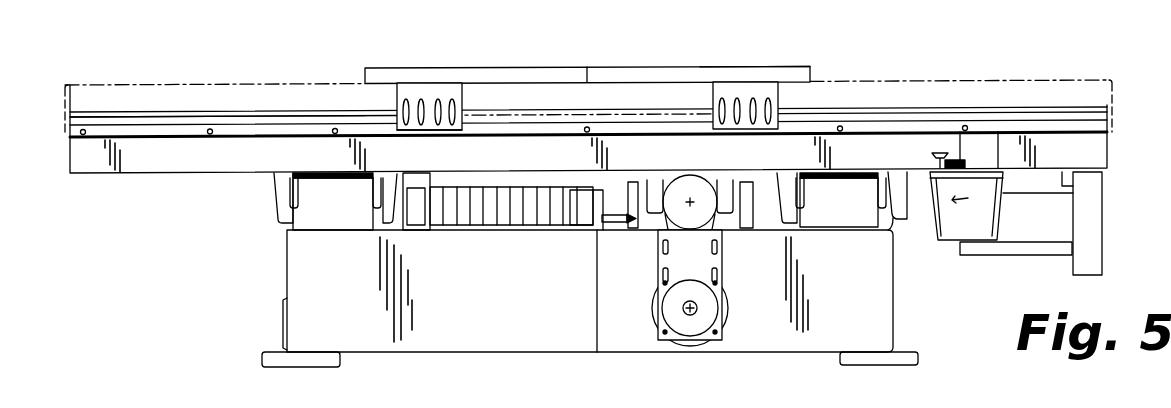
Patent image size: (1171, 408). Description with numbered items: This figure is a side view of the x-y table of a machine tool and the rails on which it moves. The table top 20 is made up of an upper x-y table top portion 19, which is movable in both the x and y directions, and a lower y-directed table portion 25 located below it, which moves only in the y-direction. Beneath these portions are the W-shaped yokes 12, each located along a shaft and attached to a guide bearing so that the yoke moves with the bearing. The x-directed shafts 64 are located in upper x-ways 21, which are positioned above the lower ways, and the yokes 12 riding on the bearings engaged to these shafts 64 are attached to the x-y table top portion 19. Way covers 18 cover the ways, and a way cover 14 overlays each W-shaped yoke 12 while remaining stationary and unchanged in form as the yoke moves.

The W-shaped yoke 12 is at (420, 88).
The way cover 14 is at (292, 180).
The way cover 18 is at (166, 83).
The x-y table top portion 19 is at (706, 67).
The table top 20 is at (521, 148).
The upper x-ways 21 is at (323, 100).
The y-directed table portion 25 is at (177, 162).
The x-directed shafts 64 is at (88, 112).